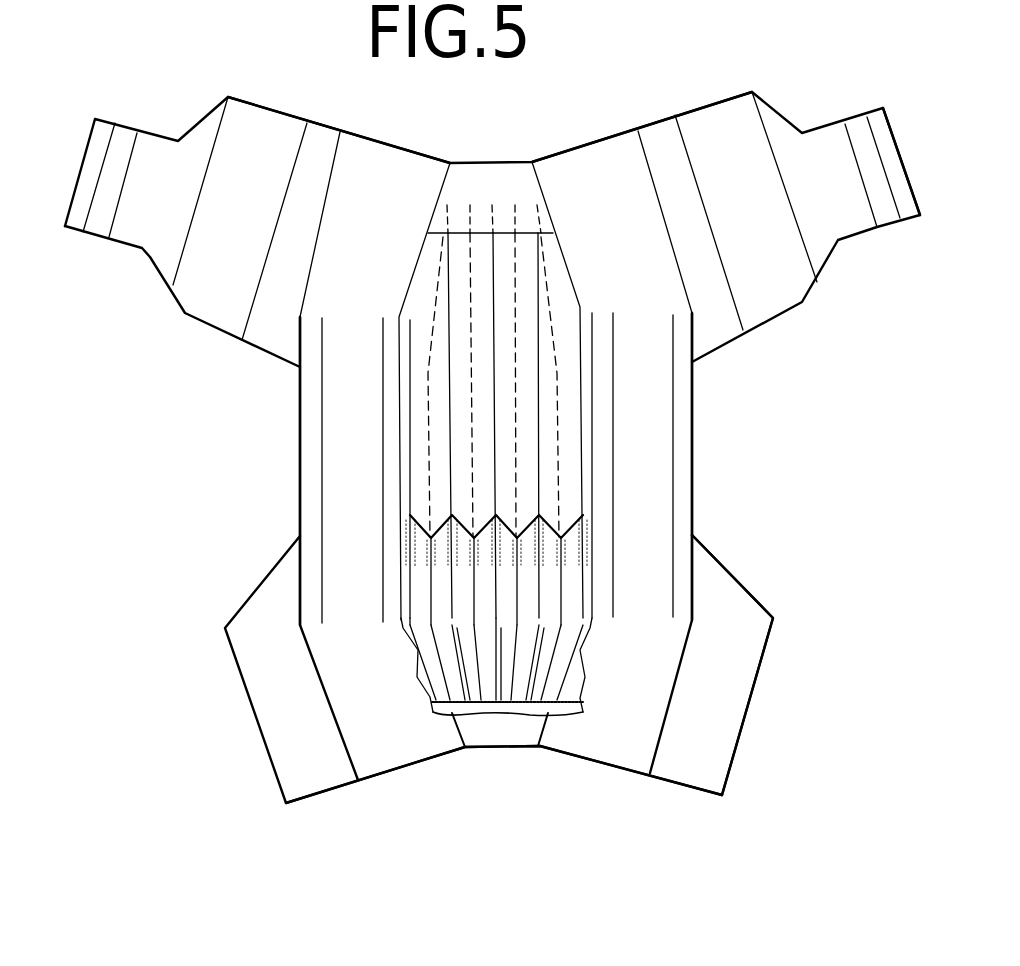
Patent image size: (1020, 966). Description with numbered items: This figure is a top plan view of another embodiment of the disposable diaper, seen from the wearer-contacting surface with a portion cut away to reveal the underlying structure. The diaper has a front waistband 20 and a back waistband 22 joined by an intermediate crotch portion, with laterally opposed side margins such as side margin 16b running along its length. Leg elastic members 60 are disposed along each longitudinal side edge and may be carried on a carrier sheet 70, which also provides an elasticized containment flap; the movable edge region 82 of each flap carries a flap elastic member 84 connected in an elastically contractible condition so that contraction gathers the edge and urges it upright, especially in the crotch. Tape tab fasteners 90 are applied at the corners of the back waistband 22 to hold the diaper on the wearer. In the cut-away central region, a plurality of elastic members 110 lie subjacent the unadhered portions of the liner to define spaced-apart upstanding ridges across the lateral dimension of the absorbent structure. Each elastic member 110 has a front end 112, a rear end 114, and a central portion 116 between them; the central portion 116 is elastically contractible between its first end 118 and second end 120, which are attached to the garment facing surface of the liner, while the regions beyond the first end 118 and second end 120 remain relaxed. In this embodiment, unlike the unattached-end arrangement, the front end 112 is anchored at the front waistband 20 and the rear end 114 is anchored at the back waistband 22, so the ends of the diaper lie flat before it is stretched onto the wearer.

The front waistband 20 is at (527, 705).
The back waistband 22 is at (587, 162).
The side margin 16b is at (300, 442).
The leg elastic member 60 is at (677, 543).
The carrier sheet 70 is at (622, 712).
The movable edge region 82 is at (572, 267).
The flap elastic member 84 is at (617, 508).
The tape tab fastener 90 is at (830, 140).
The elastic member 110 is at (592, 595).
The front end 112 is at (490, 703).
The rear end 114 is at (468, 210).
The central portion 116 is at (583, 462).
The first end 118 is at (590, 617).
The second end 120 is at (585, 302).